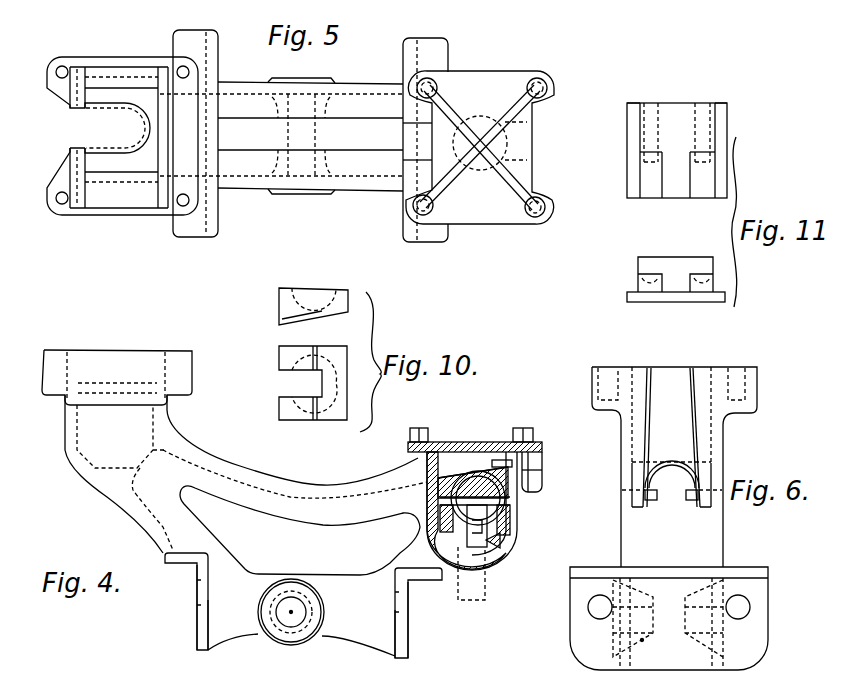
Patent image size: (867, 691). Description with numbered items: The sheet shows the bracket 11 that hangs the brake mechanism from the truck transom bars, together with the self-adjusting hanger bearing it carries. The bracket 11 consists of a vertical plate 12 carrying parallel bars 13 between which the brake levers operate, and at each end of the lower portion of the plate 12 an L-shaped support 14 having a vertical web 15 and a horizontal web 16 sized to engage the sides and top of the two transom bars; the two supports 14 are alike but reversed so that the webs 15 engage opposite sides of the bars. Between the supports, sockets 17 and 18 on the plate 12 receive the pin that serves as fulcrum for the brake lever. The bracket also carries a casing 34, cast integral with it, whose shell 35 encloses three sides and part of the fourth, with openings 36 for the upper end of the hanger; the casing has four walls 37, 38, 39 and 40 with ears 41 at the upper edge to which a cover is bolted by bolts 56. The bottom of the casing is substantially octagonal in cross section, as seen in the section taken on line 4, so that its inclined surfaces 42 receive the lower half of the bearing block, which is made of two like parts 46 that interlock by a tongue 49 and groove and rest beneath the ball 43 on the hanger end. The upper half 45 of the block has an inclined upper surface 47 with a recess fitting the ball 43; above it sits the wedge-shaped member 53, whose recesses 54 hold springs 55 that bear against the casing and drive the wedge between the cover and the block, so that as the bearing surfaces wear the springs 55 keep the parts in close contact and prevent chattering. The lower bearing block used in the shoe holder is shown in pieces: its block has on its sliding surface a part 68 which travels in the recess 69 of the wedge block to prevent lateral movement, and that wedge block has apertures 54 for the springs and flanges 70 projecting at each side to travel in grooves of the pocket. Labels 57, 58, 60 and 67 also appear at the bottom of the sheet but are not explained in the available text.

In FIG. 5, the section line 4 is at (420, 138).
In FIG. 4, the bracket 11 is at (304, 465).
In FIG. 4, the vertical plate 12 is at (234, 503).
In FIG. 5, the parallel bars 13 is at (362, 83).
In FIG. 4, the parallel bars 13 is at (213, 466).
In FIG. 4, the L-shaped support 14 is at (197, 637).
In FIG. 6, the L-shaped support 14 is at (762, 613).
In FIG. 4, the vertical web 15 is at (196, 593).
In FIG. 6, the vertical web 15 is at (556, 656).
In FIG. 5, the horizontal web 16 is at (173, 40).
In FIG. 4, the horizontal web 16 is at (183, 557).
In FIG. 6, the horizontal web 16 is at (596, 560).
In FIG. 5, the socket 17 is at (267, 140).
In FIG. 5, the socket 18 is at (326, 118).
In FIG. 4, the socket 18 is at (297, 588).
In FIG. 6, the socket 18 is at (645, 641).
In FIG. 4, the casing 34 is at (511, 536).
In FIG. 4, the shell 35 is at (427, 465).
In FIG. 5, the openings 36 is at (117, 128).
In FIG. 6, the openings 36 is at (683, 367).
In FIG. 5, the wall 37 is at (110, 58).
In FIG. 5, the wall 38 is at (166, 137).
In FIG. 5, the wall 39 is at (133, 210).
In FIG. 5, the wall 40 is at (70, 107).
In FIG. 6, the wall 40 is at (648, 357).
In FIG. 5, the ears 41 is at (62, 62).
In FIG. 4, the inclined surface 42 is at (455, 545).
In FIG. 4, the ball 43 is at (520, 505).
In FIG. 4, the upper half of bearing block 45 is at (543, 480).
In FIG. 4, the lower half blocks 46 is at (502, 543).
In FIG. 10, the inclined upper surface 47 is at (290, 315).
In FIG. 4, the tongue 49 is at (475, 503).
In FIG. 4, the wedge-shaped member 53 is at (486, 448).
In FIG. 11, the recesses 54 is at (652, 105).
In FIG. 5, the springs 55 is at (480, 143).
In FIG. 4, the springs 55 is at (441, 442).
In FIG. 5, the bolts 56 is at (548, 88).
In FIG. 4, the bolts 56 is at (414, 428).
In FIG. 4, the part 57 is at (283, 687).
In FIG. 4, the part 58 is at (233, 687).
In FIG. 4, the part 60 is at (451, 687).
In FIG. 4, the part 67 is at (516, 687).
In FIG. 6, the part 67 is at (688, 687).
In FIG. 10, the part 68 is at (283, 383).
In FIG. 11, the recess 69 is at (677, 190).
In FIG. 11, the flanges 70 is at (722, 120).